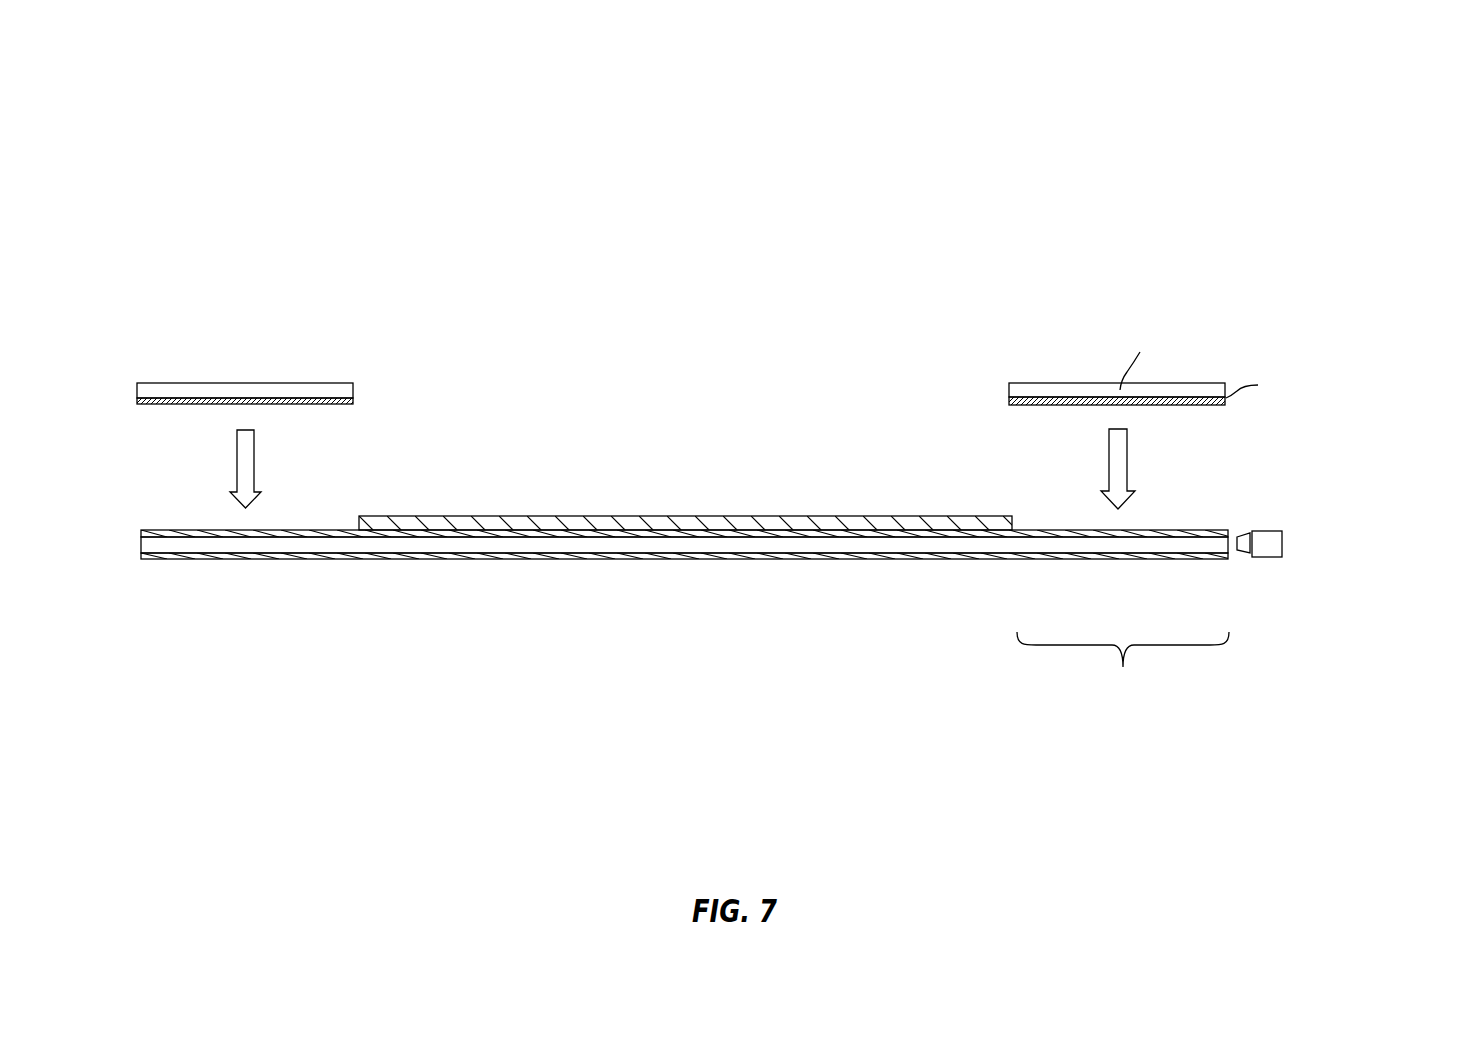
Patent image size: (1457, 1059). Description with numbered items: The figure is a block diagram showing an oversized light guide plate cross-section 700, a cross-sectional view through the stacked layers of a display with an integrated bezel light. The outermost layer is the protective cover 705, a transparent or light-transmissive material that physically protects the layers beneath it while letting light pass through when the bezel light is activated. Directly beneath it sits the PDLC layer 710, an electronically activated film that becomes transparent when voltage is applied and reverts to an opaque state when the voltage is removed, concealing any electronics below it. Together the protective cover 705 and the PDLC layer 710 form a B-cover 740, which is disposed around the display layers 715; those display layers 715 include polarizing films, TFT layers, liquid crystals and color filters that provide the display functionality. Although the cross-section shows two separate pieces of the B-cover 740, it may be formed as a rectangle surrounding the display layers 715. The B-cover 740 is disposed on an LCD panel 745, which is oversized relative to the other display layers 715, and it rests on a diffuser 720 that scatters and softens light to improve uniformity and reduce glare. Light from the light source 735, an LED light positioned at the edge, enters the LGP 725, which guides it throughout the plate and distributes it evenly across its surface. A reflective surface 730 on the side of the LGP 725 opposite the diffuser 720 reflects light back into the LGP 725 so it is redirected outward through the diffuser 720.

The oversized light guide plate cross-section 700 is at (1381, 34).
The protective cover 705 is at (247, 390).
The PDLC layer 710 is at (354, 398).
The display layers 715 is at (704, 521).
The diffuser 720 is at (209, 530).
The light guide plate (LGP) 725 is at (140, 545).
The reflective surface 730 is at (338, 559).
The light source 735 is at (1283, 542).
The B-cover 740 is at (1327, 311).
The LCD panel 745 is at (1327, 492).